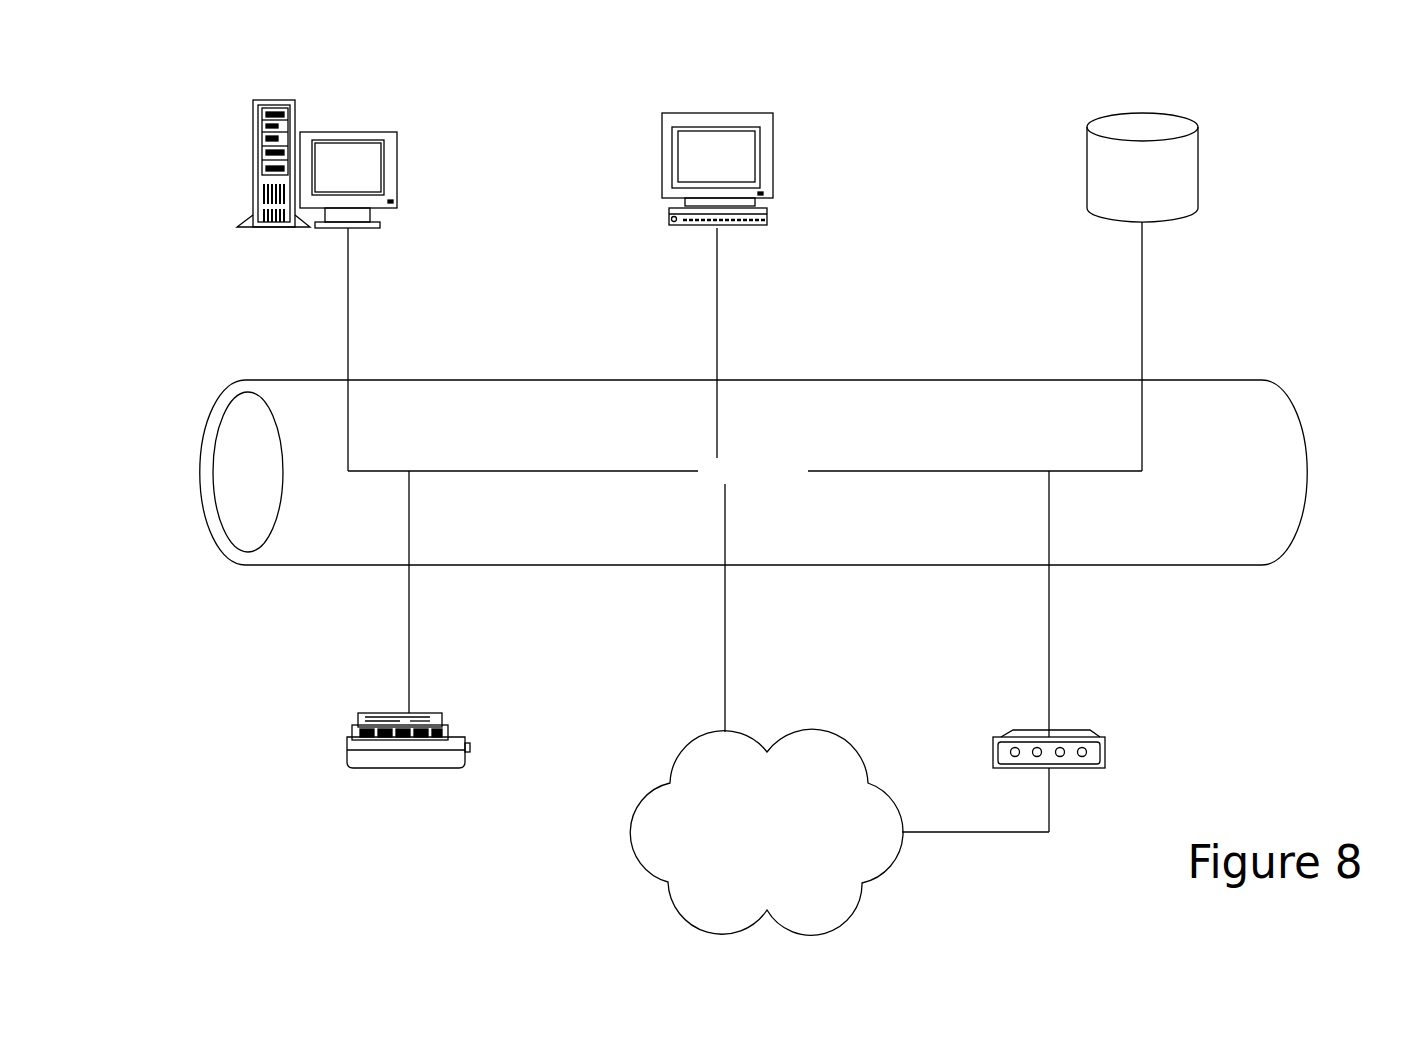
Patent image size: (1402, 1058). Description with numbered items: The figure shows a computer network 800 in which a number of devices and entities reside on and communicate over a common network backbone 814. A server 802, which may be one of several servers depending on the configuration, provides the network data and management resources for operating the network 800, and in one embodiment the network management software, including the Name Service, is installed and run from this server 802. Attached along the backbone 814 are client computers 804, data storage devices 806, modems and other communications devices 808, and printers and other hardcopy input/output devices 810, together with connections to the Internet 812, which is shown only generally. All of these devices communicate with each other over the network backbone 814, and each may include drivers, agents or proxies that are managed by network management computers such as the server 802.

The computer network 800 is at (150, 167).
The server 802 is at (397, 160).
The client computers 804 is at (773, 168).
The data storage devices 806 is at (1198, 165).
The modems and other communications devices 808 is at (1107, 745).
The printers and other hardcopy input/output devices 810 is at (470, 740).
The connections to the Internet 812 is at (807, 731).
The network backbone 814 is at (247, 472).